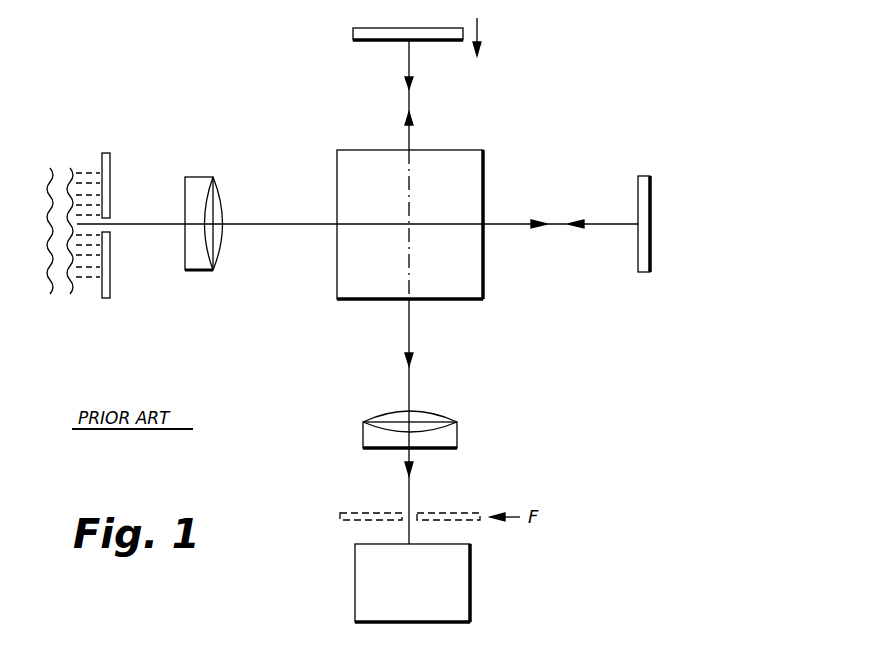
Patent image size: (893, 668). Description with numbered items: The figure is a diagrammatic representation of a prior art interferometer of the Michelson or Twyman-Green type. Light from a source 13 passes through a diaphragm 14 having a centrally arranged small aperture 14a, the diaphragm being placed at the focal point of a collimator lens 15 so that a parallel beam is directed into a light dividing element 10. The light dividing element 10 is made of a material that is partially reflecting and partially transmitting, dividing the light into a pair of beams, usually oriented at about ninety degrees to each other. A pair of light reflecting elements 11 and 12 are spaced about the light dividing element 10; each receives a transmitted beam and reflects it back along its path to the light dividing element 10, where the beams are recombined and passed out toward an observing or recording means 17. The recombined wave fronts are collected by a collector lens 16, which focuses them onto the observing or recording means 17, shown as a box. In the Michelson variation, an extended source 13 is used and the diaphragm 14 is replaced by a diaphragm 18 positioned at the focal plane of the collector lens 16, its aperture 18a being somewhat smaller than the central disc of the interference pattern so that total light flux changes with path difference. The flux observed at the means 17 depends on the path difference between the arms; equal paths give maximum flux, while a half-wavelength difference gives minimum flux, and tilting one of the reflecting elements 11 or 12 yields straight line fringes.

The light dividing element 10 is at (483, 155).
The light reflecting element 11 is at (370, 35).
The light reflecting element 12 is at (650, 253).
The light source 13 is at (62, 165).
The diaphragm 14 is at (110, 290).
The aperture 14a is at (105, 227).
The collimator lens 15 is at (213, 250).
The collector lens 16 is at (457, 433).
The observing or recording means 17 is at (470, 550).
The diaphragm 18 is at (353, 513).
The aperture 18a is at (415, 515).